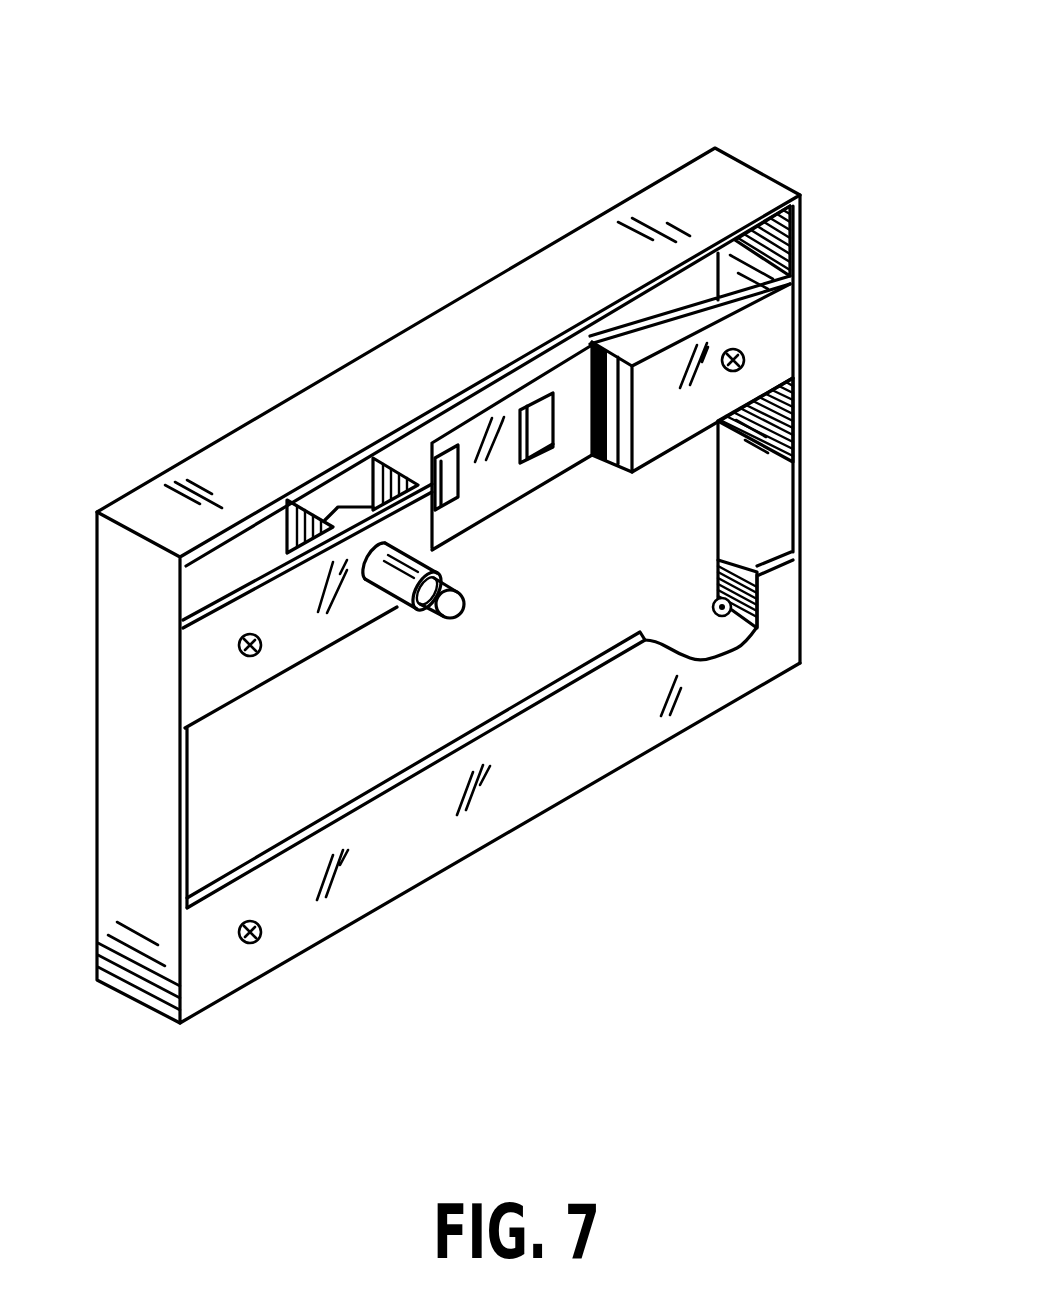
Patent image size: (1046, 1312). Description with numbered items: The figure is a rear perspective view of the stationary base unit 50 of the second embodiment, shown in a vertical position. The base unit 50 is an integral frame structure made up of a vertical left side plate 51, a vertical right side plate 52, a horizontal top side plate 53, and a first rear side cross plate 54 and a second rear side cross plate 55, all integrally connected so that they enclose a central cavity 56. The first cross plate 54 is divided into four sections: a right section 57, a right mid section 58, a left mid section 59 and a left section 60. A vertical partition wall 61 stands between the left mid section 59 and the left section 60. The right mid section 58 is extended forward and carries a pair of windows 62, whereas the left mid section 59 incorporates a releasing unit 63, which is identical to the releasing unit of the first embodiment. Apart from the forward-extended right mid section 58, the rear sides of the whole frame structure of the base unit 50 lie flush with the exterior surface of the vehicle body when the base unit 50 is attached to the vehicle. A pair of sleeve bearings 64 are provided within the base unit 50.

The base unit 50 is at (555, 240).
The left side plate 51 is at (148, 1008).
The right side plate 52 is at (805, 440).
The top side plate 53 is at (647, 190).
The first rear side cross plate 54 is at (247, 695).
The second rear side cross plate 55 is at (430, 822).
The central cavity 56 is at (623, 542).
The right section 57 is at (767, 358).
The right mid section 58 is at (498, 470).
The left mid section 59 is at (373, 472).
The left section 60 is at (290, 622).
The vertical partition wall 61 is at (288, 524).
The windows 62 is at (550, 390).
The releasing unit 63 is at (423, 620).
The sleeve bearings 64 is at (748, 640).